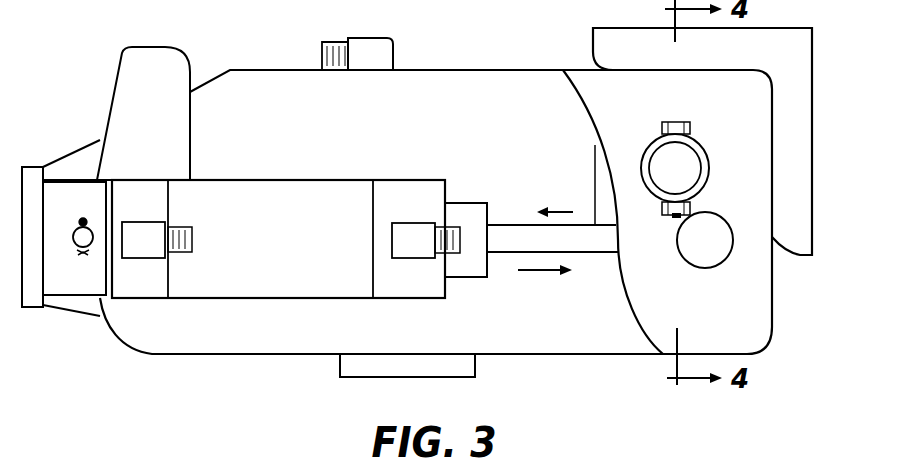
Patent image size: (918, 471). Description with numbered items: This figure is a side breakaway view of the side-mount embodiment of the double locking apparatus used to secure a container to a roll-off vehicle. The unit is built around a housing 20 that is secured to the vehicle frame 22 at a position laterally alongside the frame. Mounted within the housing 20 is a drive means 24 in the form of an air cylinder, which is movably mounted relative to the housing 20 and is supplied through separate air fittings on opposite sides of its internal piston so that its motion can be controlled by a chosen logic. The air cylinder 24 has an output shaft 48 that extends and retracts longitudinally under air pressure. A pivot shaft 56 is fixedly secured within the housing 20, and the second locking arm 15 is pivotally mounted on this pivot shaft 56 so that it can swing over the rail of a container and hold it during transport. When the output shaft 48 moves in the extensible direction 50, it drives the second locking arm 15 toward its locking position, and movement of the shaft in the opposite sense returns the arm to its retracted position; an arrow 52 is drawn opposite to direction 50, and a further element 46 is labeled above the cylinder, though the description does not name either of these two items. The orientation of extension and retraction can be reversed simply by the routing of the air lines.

The second locking arm 15 is at (163, 104).
The housing 20 is at (767, 305).
The vehicle frame 22 is at (802, 62).
The drive means 24 is at (252, 231).
The upper housing 46 is at (258, 180).
The output shaft 48 is at (505, 223).
The extensible direction 50 is at (553, 272).
The rearward direction arrow 52 is at (558, 210).
The pivot shaft 56 is at (697, 167).